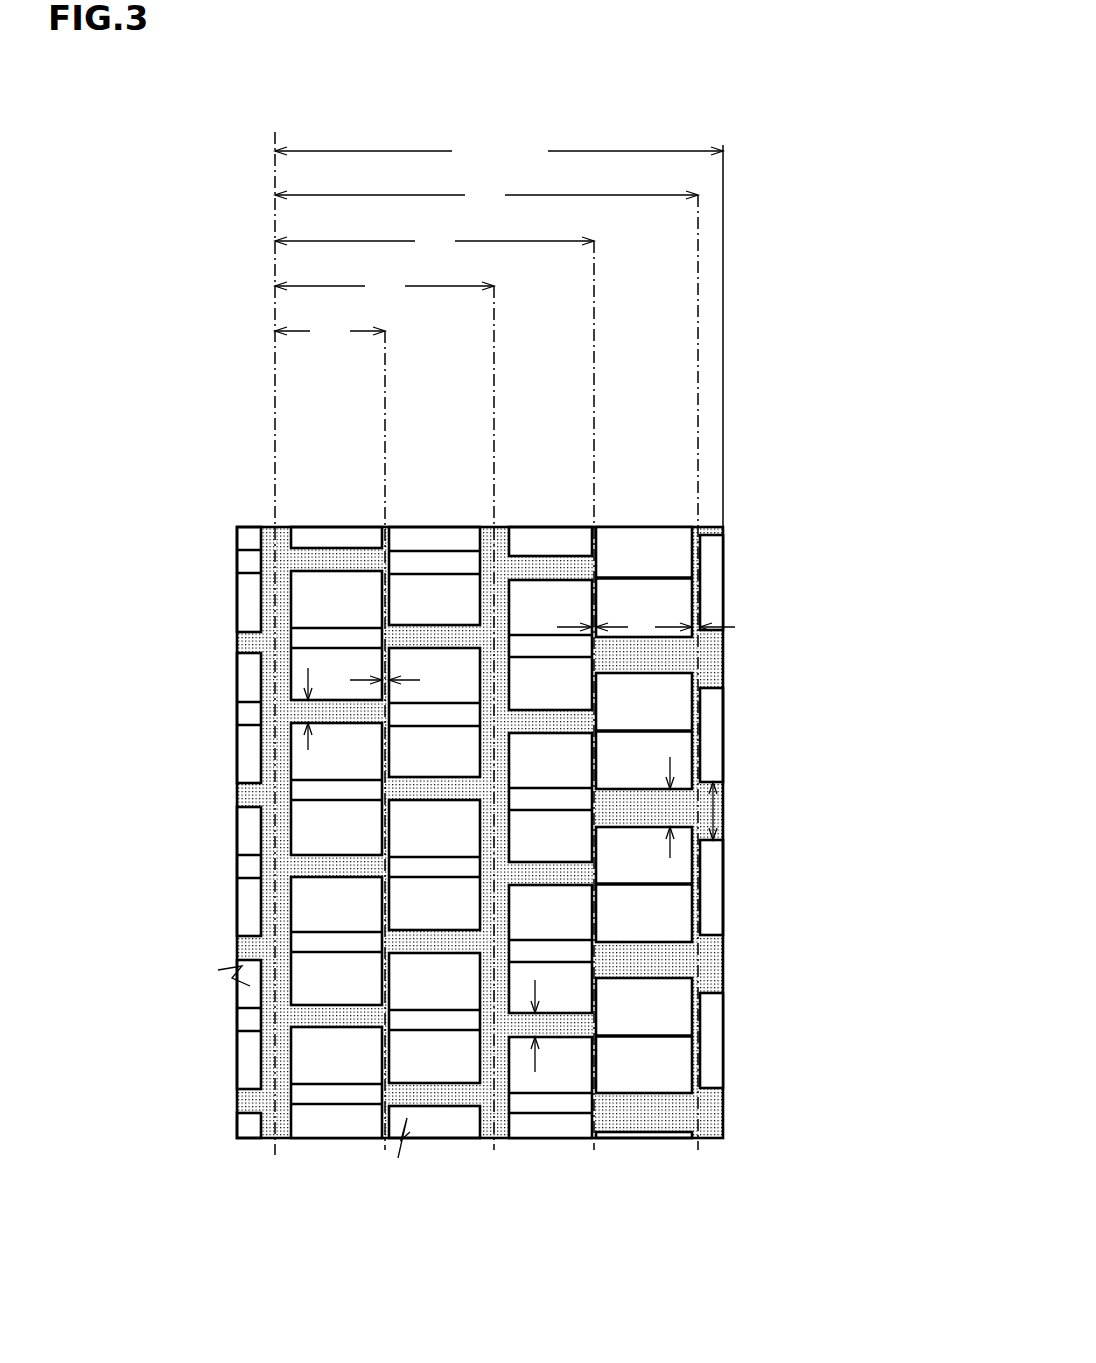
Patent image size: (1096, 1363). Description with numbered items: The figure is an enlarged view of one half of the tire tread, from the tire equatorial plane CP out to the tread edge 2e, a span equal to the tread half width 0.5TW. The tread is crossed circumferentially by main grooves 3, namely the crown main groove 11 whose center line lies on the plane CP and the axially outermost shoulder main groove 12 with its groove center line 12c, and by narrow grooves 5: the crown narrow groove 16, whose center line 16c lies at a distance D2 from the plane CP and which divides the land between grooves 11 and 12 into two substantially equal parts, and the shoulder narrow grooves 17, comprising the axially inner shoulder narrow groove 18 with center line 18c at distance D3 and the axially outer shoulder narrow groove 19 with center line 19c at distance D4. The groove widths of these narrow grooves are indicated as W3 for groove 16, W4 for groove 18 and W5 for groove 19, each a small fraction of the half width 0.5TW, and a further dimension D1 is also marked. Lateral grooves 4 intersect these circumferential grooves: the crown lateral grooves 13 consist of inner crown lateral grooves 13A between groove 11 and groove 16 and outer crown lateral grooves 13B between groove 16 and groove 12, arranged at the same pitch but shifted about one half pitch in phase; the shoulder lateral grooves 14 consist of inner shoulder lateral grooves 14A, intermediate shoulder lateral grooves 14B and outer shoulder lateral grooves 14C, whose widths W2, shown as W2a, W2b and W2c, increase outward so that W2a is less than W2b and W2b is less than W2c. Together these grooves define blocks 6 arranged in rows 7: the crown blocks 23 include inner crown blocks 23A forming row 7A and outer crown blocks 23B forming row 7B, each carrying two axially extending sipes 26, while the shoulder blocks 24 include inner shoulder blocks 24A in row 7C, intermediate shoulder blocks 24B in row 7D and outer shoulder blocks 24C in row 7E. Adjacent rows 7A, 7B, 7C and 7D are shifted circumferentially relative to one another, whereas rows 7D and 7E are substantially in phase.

The tread edge 2e is at (724, 598).
The main groove 3 is at (378, 630).
The crown main groove 11 is at (245, 630).
The shoulder main groove 12 is at (491, 713).
The narrow groove 5 is at (609, 661).
The crown narrow groove 16 is at (382, 728).
The shoulder narrow groove 17 is at (748, 661).
The axially inner shoulder narrow groove 18 is at (704, 692).
The axially outer shoulder narrow groove 19 is at (756, 661).
The row of blocks 7 is at (541, 594).
The row of inner crown blocks 7A is at (317, 592).
The row of outer crown blocks 7B is at (429, 592).
The row of inner shoulder blocks 7C is at (546, 602).
The row of intermediate shoulder blocks 7D is at (645, 600).
The row of outer shoulder blocks 7E is at (712, 577).
The lateral groove 4 is at (482, 1016).
The crown lateral groove 13 is at (245, 1046).
The axially inner crown lateral groove 13A is at (322, 1020).
The axially outer crown lateral groove 13B is at (428, 1096).
The shoulder lateral groove 14 is at (730, 981).
The axially inner shoulder lateral groove 14A is at (558, 1022).
The intermediate shoulder lateral groove 14B is at (634, 965).
The axially outer shoulder lateral groove 14C is at (706, 981).
The block 6 is at (516, 1118).
The crown block 23 is at (389, 1118).
The axially inner crown block 23A is at (358, 1113).
The axially outer crown block 23B is at (437, 1057).
The shoulder block 24 is at (625, 1131).
The inner shoulder block 24A is at (560, 1120).
The intermediate shoulder block 24B is at (637, 1076).
The outer shoulder block 24C is at (707, 1115).
The sipe 26 is at (440, 878).
The tire equatorial plane CP is at (273, 572).
The groove center line of shoulder main groove 12c is at (495, 352).
The groove center line of crown narrow groove 16c is at (386, 384).
The groove center line of inner shoulder narrow groove 18c is at (595, 312).
The groove center line of outer shoulder narrow groove 19c is at (699, 250).
The groove width of shoulder lateral grooves W2 is at (482, 870).
The groove width of inner shoulder lateral groove W2a is at (306, 710).
The groove width of intermediate shoulder lateral groove W2b is at (672, 826).
The groove width of outer shoulder lateral groove W2c is at (715, 800).
The groove width of crown narrow groove W3 is at (393, 670).
The groove width of inner shoulder narrow groove W4 is at (598, 616).
The groove width of outer shoulder narrow groove W5 is at (713, 634).
The tread half width 0.5TW is at (499, 152).
The distance D1 is at (384, 287).
The distance of crown narrow groove center line from equatorial plane D2 is at (330, 332).
The distance of inner shoulder narrow groove center line from equatorial plane D3 is at (434, 242).
The distance of outer shoulder narrow groove center line from equatorial plane D4 is at (486, 196).